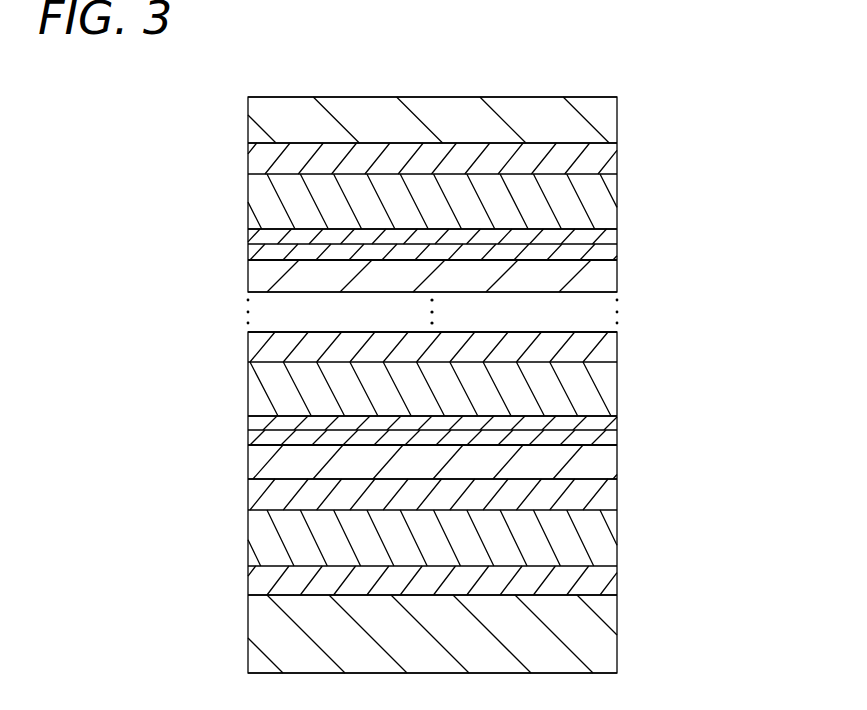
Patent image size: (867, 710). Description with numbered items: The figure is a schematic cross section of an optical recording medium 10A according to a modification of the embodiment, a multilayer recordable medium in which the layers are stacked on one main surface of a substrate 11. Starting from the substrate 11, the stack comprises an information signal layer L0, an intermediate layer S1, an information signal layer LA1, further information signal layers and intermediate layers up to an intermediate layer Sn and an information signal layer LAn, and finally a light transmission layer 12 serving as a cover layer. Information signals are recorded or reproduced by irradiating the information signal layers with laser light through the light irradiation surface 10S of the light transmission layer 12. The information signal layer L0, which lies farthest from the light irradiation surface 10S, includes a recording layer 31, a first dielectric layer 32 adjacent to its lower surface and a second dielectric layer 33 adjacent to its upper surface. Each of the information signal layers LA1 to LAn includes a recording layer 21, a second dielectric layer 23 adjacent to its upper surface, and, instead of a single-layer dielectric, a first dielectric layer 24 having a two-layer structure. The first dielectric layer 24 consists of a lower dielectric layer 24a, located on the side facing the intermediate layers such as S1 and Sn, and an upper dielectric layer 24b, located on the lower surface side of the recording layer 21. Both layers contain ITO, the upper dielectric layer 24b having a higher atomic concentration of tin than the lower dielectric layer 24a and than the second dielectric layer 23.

The optical recording medium 10A is at (326, 77).
The light irradiation surface 10S is at (580, 90).
The light transmission layer 12 is at (605, 119).
The second dielectric layer 23 is at (605, 159).
The recording layer 21 is at (605, 200).
The upper dielectric layer 24b is at (605, 237).
The lower dielectric layer 24a is at (605, 251).
The first dielectric layer 24 is at (715, 218).
The intermediate layer Sn is at (605, 278).
The information signal layer LAn is at (783, 150).
The information signal layer LA1 is at (783, 335).
The intermediate layer S1 is at (605, 462).
The second dielectric layer 33 is at (605, 495).
The recording layer 31 is at (605, 537).
The first dielectric layer 32 is at (605, 577).
The information signal layer L0 is at (705, 485).
The substrate 11 is at (605, 636).